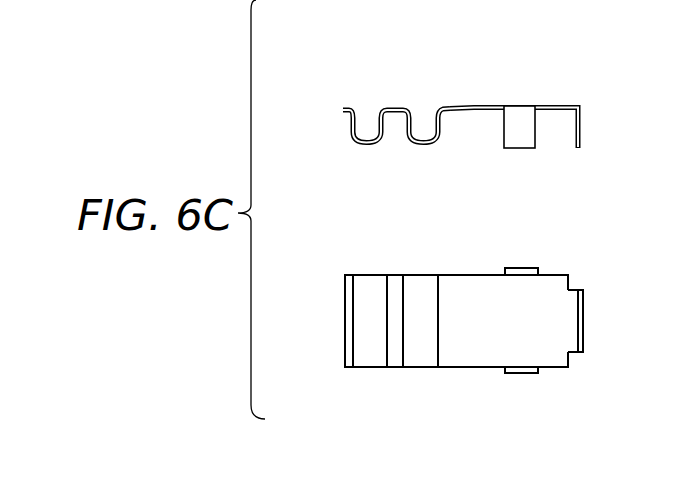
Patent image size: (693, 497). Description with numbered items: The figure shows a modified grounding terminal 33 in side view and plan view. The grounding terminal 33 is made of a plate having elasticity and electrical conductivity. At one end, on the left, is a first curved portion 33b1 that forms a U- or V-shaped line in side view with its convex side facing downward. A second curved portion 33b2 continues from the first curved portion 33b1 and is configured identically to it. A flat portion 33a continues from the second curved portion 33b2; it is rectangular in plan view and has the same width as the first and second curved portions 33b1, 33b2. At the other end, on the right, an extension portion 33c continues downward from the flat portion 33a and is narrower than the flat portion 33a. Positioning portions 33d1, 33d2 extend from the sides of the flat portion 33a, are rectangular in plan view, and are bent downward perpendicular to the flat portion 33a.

The grounding terminal 33 is at (325, 78).
The first curved portion 33b1 is at (368, 283).
The second curved portion 33b2 is at (422, 283).
The flat portion 33a is at (472, 285).
The extension portion 33c is at (581, 128).
The positioning portion 33d1 is at (520, 120).
The positioning portion 33d2 is at (540, 395).